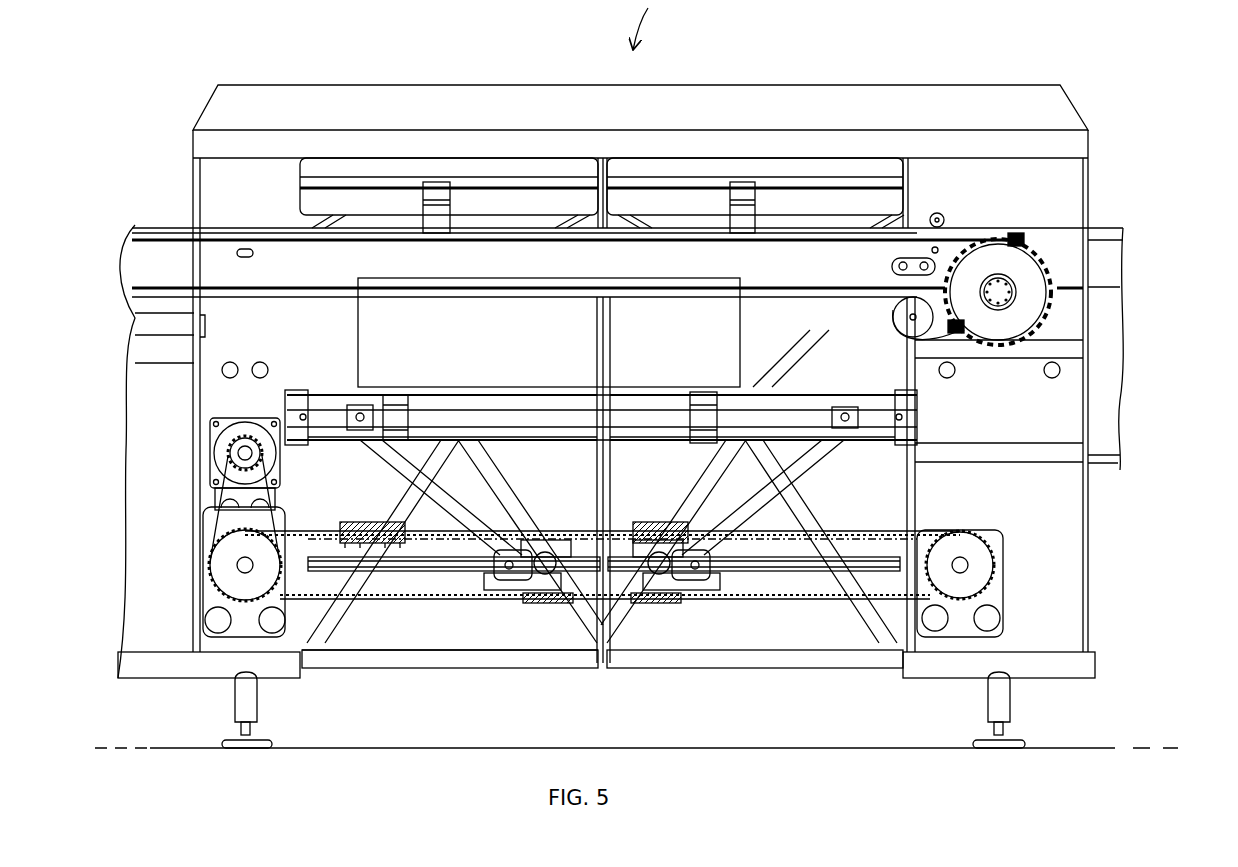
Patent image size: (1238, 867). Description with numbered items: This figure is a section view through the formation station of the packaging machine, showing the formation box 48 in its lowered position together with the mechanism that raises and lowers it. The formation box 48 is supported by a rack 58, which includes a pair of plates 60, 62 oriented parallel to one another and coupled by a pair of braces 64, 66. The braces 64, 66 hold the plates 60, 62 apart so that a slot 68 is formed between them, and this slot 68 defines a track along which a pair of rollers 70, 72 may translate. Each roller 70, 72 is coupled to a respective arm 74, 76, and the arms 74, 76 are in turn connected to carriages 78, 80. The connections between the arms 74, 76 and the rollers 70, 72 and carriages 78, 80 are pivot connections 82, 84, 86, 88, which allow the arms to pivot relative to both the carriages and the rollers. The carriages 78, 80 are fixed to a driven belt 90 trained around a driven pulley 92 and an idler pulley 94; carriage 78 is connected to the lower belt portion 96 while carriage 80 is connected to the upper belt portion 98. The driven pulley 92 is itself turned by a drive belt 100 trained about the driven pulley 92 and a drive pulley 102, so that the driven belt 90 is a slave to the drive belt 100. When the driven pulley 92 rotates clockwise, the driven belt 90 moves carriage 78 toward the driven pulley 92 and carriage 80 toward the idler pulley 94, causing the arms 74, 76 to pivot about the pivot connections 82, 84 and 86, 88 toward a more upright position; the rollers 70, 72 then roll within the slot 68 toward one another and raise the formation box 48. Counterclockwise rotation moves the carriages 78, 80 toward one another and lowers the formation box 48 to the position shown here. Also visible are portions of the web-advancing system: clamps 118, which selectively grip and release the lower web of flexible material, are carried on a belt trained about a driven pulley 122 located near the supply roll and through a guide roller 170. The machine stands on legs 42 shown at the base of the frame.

The leveling leg 42 is at (243, 707).
The formation box 48 is at (575, 341).
The rack 58 is at (355, 452).
The plate 60 is at (325, 400).
The plate 62 is at (652, 432).
The brace 64 is at (403, 420).
The brace 66 is at (713, 413).
The slot 68 is at (568, 420).
The roller 70 is at (353, 435).
The roller 72 is at (848, 430).
The arm 74 is at (440, 522).
The arm 76 is at (773, 493).
The carriage 78 is at (513, 607).
The carriage 80 is at (687, 610).
The pivot connection 82 is at (505, 570).
The pivot connection 84 is at (700, 568).
The pivot connection 86 is at (362, 418).
The pivot connection 88 is at (846, 417).
The driven belt 90 is at (387, 607).
The driven pulley 92 is at (227, 575).
The idler pulley 94 is at (980, 568).
The lower belt portion 96 is at (573, 607).
The upper belt portion 98 is at (622, 530).
The drive belt 100 is at (207, 507).
The drive pulley 102 is at (220, 448).
The clamp 118 is at (1017, 233).
The pulley 122 is at (1030, 292).
The guide roller 170 is at (905, 315).